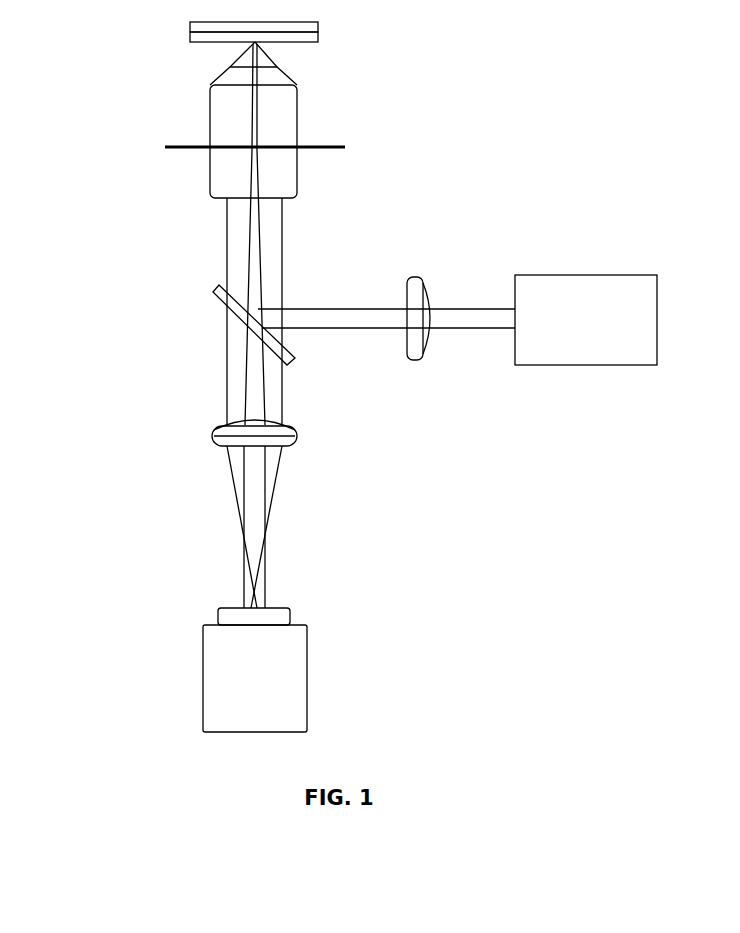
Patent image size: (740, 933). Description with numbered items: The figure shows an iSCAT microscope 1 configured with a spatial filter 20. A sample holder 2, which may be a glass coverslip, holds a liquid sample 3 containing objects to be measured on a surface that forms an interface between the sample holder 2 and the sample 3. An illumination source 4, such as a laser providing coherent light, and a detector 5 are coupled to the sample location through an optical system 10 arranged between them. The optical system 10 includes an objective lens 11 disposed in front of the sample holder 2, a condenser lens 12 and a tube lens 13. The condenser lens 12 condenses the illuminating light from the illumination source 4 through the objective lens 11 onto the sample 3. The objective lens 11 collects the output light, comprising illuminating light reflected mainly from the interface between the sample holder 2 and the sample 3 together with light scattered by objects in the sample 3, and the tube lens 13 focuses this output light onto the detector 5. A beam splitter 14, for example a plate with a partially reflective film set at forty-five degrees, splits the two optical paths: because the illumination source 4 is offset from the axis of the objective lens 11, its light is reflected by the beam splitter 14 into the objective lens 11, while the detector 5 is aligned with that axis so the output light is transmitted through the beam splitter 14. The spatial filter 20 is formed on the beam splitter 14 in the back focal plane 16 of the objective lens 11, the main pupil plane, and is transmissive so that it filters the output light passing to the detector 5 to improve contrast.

The iSCAT microscope 1 is at (86, 227).
The sample holder 2 is at (190, 33).
The sample 3 is at (318, 26).
The illumination source 4 is at (573, 353).
The detector 5 is at (217, 677).
The optical system 10 is at (174, 346).
The objective lens 11 is at (297, 122).
The condenser lens 12 is at (413, 277).
The tube lens 13 is at (212, 434).
The beam splitter 14 is at (213, 300).
The focal plane 16 is at (190, 150).
The spatial filter 20 is at (259, 308).